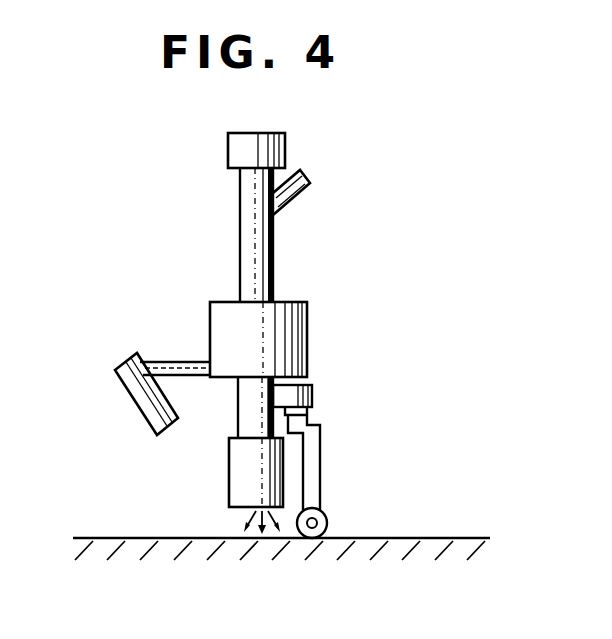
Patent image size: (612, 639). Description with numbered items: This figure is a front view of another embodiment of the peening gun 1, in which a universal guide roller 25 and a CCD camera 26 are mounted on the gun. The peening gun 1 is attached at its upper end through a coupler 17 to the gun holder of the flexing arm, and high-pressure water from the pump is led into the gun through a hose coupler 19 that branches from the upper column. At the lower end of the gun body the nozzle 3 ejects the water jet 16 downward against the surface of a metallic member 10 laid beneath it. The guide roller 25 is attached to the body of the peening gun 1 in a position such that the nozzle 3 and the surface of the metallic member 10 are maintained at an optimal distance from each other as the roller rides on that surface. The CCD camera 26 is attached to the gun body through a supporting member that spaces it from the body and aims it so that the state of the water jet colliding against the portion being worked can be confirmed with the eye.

The peening gun 1 is at (302, 332).
The nozzle 3 is at (235, 478).
The metallic member 10 is at (343, 542).
The spray jets 16 is at (258, 528).
The coupler 17 is at (232, 153).
The hose coupler 19 is at (297, 203).
The universal guide roller 25 is at (313, 470).
The CCD camera 26 is at (143, 403).